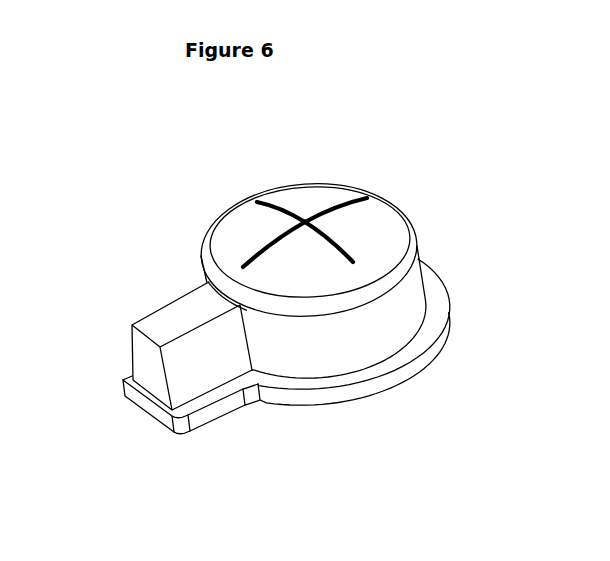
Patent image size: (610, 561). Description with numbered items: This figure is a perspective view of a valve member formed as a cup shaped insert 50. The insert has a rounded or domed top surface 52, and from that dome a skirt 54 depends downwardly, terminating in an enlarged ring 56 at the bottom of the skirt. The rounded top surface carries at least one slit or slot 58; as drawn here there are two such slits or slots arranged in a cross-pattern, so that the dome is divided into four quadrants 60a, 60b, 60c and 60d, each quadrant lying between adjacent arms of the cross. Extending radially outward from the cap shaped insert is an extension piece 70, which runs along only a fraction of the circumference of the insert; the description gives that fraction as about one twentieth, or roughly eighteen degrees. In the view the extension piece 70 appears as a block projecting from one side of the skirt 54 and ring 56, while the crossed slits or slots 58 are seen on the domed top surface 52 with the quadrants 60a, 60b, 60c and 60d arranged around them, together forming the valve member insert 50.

The cup shaped insert 50 is at (204, 201).
The domed top surface 52 is at (338, 218).
The skirt 54 is at (405, 303).
The enlarged ring 56 is at (425, 348).
The slit 58 is at (283, 203).
The quadrant 60a is at (295, 260).
The quadrant 60b is at (357, 227).
The quadrant 60c is at (317, 202).
The quadrant 60d is at (250, 233).
The extension piece 70 is at (190, 382).